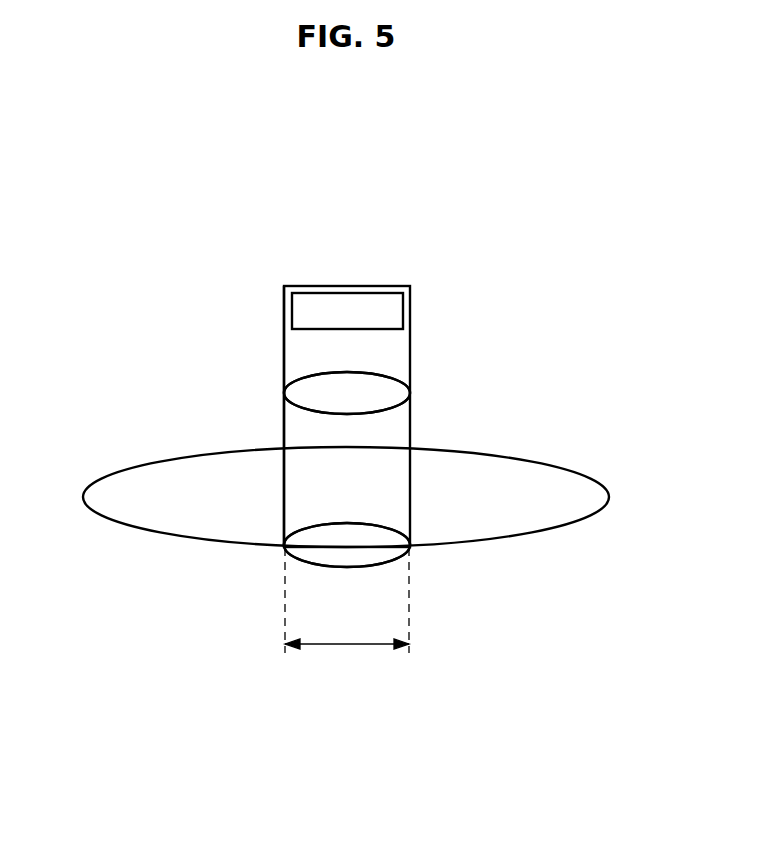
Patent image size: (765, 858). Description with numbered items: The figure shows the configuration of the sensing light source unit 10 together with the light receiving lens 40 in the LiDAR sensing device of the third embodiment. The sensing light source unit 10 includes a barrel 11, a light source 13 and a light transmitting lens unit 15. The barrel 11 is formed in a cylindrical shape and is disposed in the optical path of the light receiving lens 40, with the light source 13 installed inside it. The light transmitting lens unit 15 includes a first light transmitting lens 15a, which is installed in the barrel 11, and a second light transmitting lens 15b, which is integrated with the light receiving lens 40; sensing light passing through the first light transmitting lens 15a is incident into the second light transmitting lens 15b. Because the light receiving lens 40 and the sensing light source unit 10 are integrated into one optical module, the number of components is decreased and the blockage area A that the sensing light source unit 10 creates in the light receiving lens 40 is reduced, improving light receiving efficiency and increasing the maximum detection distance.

The sensing light source unit 10 is at (413, 357).
The barrel 11 is at (284, 353).
The light source 13 is at (330, 310).
The light transmitting lens unit 15 is at (177, 331).
The first light transmitting lens 15a is at (288, 373).
The second light transmitting lens 15b is at (320, 523).
The light receiving lens 40 is at (520, 457).
The blockage area A is at (347, 647).